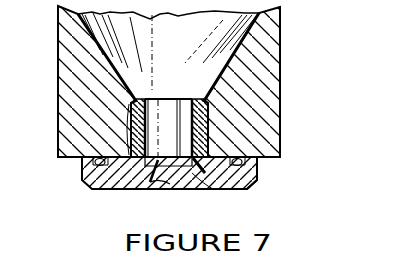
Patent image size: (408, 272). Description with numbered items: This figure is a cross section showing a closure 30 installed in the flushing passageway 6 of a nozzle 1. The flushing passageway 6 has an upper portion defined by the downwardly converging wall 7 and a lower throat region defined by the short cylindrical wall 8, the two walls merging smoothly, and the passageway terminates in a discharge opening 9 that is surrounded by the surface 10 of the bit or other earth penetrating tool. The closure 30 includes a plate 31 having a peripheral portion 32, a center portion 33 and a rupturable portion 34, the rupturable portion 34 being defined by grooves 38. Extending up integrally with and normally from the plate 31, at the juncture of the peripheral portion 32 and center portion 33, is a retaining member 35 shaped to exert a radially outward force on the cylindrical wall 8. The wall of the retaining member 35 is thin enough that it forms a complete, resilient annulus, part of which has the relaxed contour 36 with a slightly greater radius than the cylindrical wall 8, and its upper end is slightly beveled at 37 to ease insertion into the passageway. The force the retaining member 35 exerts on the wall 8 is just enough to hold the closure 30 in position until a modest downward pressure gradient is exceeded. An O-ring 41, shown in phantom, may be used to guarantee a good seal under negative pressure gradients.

The nozzle 1 is at (82, 38).
The flushing passageway 6 is at (172, 38).
The downwardly converging wall 7 is at (243, 45).
The short cylindrical wall 8 is at (143, 125).
The discharge opening 9 is at (184, 128).
The surface of the bit 10 is at (262, 158).
The closure 30 is at (75, 175).
The plate 31 is at (81, 181).
The peripheral portion 32 is at (249, 190).
The center portion 33 is at (212, 190).
The rupturable portion 34 is at (162, 190).
The retaining member 35 is at (200, 98).
The relaxed contour 36 is at (128, 127).
The beveled upper end 37 is at (131, 100).
The grooves 38 is at (137, 208).
The O-ring 41 is at (80, 160).